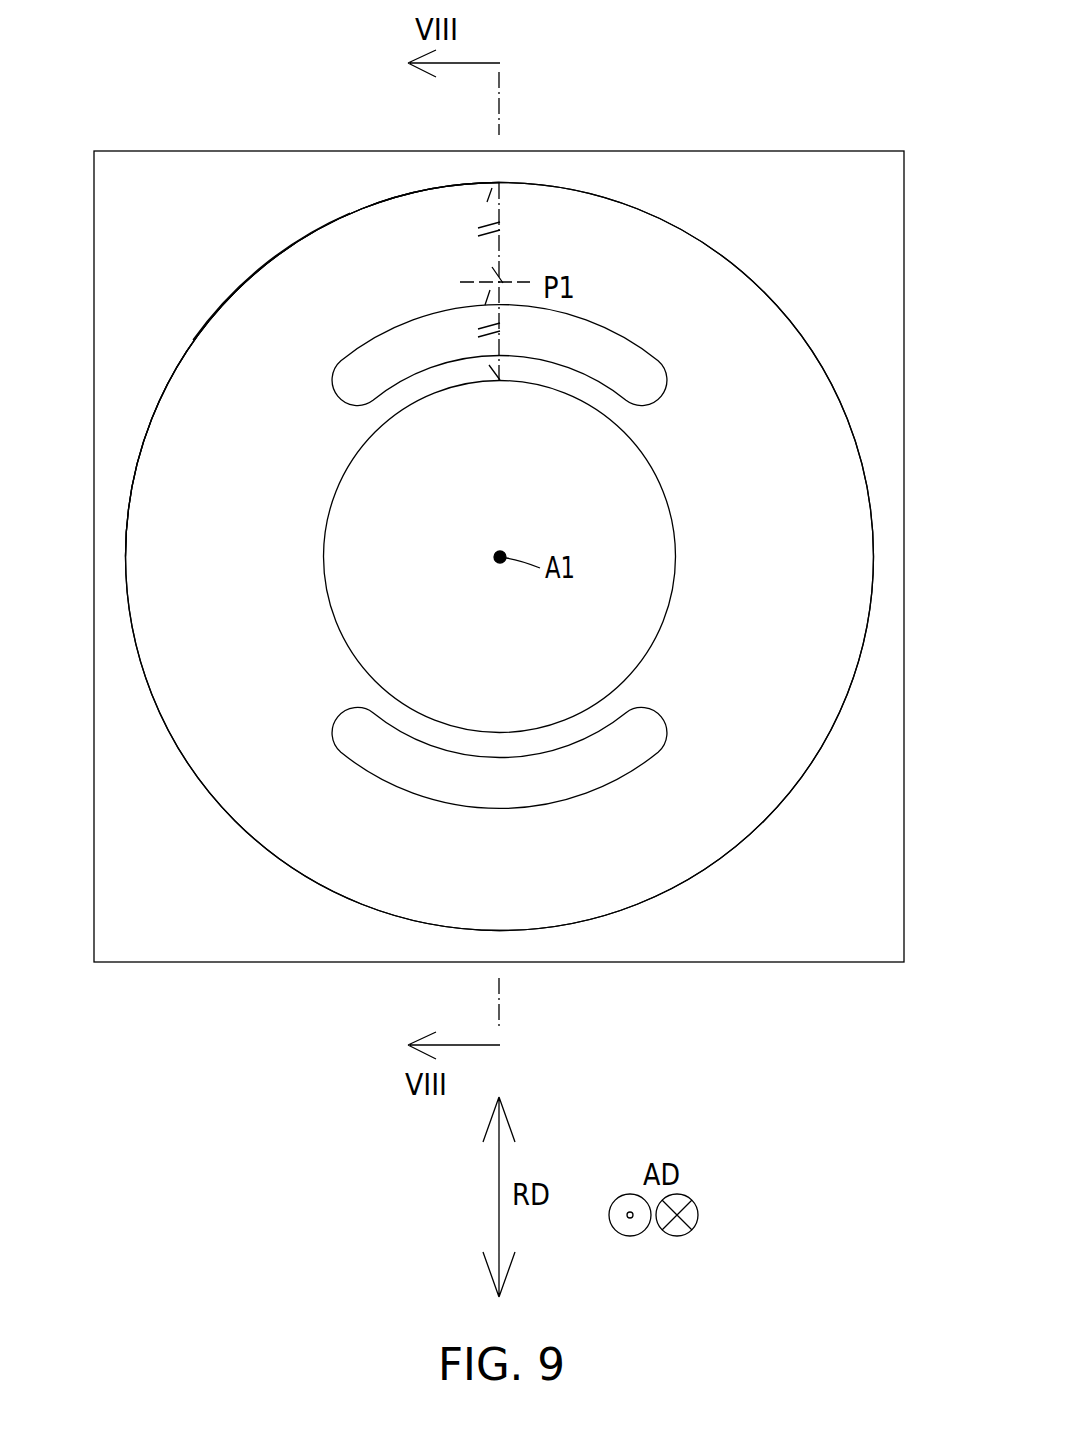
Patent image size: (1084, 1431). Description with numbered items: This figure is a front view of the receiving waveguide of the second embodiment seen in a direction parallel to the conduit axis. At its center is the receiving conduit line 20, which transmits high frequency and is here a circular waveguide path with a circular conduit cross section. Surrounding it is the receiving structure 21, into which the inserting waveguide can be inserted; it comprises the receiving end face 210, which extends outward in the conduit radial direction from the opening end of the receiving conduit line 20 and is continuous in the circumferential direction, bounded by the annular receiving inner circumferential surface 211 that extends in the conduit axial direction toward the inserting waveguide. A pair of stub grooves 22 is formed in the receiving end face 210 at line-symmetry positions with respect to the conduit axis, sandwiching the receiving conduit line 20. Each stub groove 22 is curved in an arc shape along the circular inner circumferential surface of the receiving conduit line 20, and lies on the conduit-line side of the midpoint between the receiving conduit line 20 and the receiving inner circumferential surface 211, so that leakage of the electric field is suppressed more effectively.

The receiving conduit line 20 is at (570, 510).
The receiving structure 21 is at (283, 257).
The receiving inner circumferential surface 211 is at (212, 323).
The receiving end face 210 is at (268, 489).
The stub groove 22 is at (600, 362).